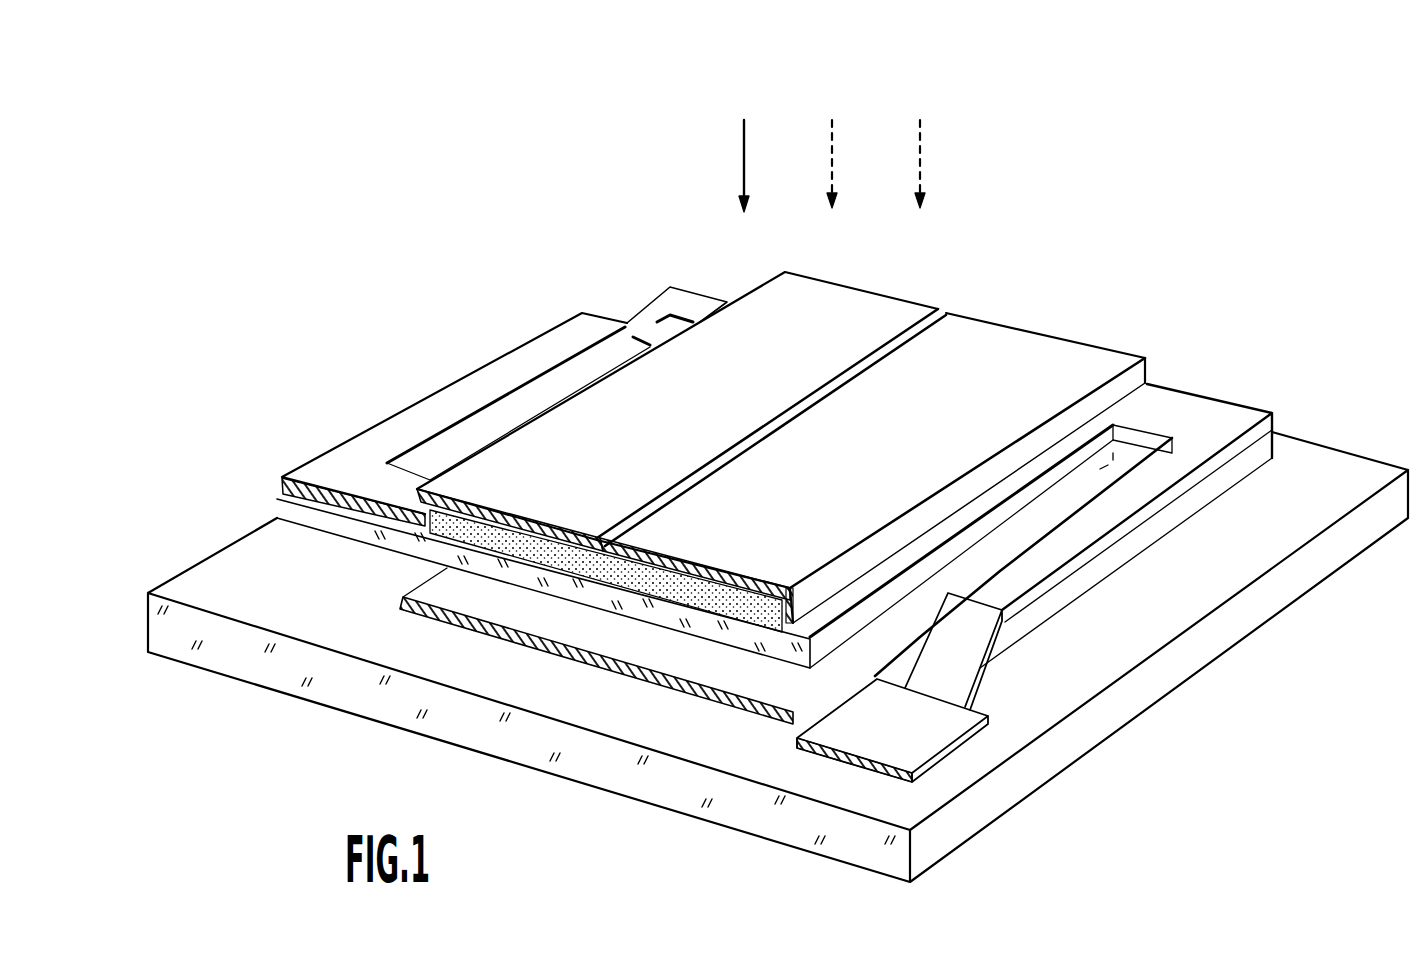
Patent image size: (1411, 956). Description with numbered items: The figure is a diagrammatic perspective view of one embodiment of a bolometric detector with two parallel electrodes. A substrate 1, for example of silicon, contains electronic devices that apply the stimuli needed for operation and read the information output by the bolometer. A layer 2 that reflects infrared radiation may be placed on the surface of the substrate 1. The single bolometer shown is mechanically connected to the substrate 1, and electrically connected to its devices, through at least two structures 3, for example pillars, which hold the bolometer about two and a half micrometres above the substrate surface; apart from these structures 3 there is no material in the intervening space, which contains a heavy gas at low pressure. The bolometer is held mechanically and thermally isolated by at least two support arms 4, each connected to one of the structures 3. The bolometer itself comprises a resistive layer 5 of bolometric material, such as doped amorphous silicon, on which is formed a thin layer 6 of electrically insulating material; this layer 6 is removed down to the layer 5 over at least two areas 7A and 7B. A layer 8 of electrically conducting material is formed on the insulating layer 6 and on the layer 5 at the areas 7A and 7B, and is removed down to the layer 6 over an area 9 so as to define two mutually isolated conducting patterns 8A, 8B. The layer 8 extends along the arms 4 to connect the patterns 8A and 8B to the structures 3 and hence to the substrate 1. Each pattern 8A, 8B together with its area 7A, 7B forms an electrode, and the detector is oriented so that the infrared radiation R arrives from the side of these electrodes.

The substrate 1 is at (1333, 467).
The reflecting layer 2 is at (597, 633).
The structures 3 is at (668, 298).
The support arms 4 is at (477, 383).
The layer of bolometric material 5 is at (278, 512).
The layer of electrically insulating material 6 is at (463, 520).
The area 7A is at (826, 598).
The area 7B is at (392, 493).
The layer of electrically conducting material 8 is at (809, 417).
The conducting pattern 8A is at (1040, 352).
The conducting pattern 8B is at (848, 312).
The area 9 is at (922, 338).
The infrared radiation R is at (746, 138).